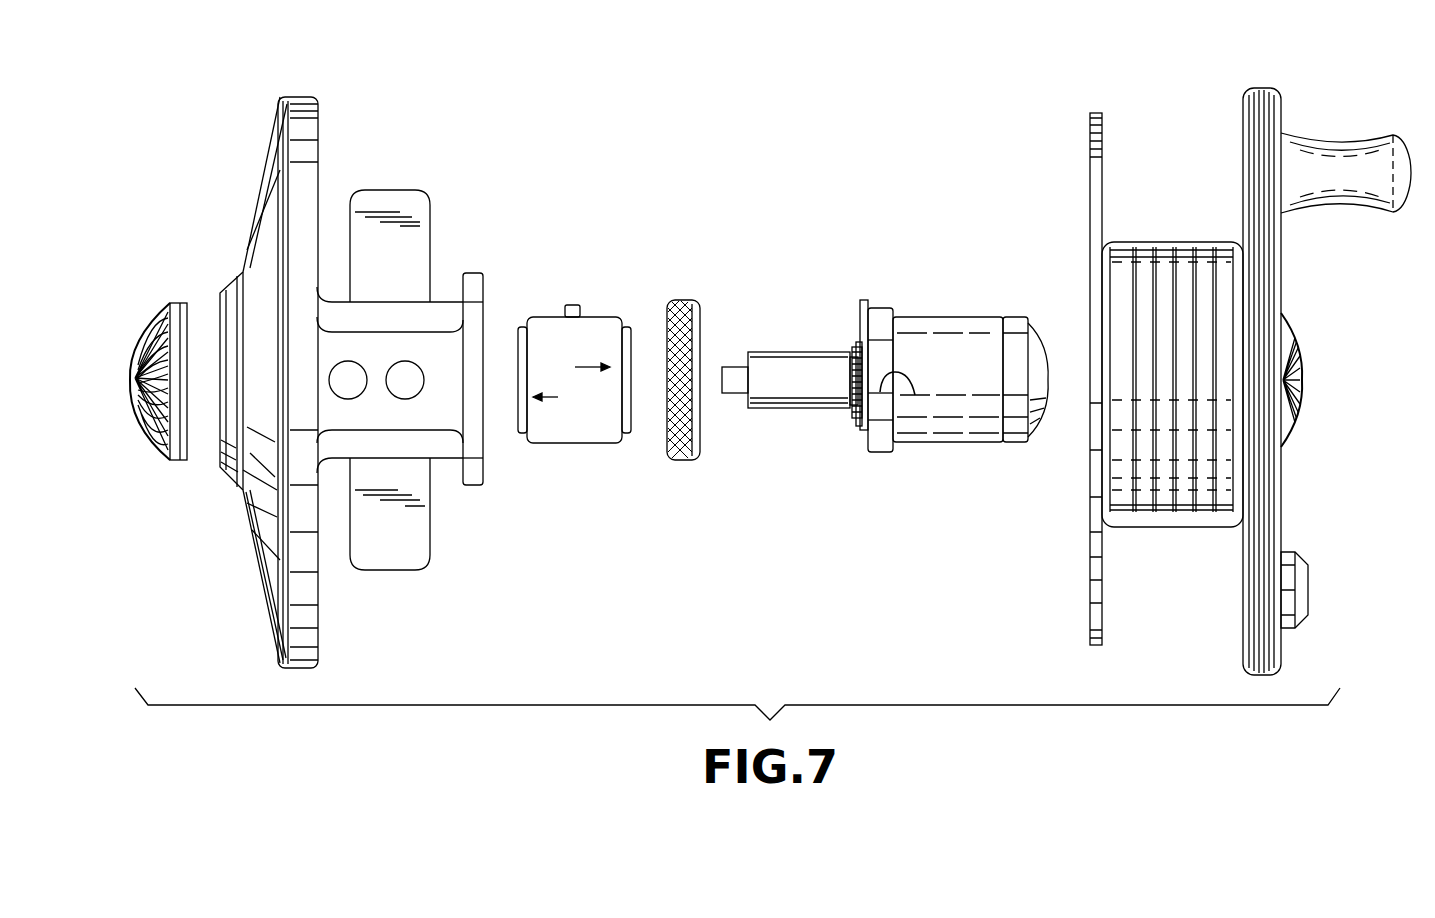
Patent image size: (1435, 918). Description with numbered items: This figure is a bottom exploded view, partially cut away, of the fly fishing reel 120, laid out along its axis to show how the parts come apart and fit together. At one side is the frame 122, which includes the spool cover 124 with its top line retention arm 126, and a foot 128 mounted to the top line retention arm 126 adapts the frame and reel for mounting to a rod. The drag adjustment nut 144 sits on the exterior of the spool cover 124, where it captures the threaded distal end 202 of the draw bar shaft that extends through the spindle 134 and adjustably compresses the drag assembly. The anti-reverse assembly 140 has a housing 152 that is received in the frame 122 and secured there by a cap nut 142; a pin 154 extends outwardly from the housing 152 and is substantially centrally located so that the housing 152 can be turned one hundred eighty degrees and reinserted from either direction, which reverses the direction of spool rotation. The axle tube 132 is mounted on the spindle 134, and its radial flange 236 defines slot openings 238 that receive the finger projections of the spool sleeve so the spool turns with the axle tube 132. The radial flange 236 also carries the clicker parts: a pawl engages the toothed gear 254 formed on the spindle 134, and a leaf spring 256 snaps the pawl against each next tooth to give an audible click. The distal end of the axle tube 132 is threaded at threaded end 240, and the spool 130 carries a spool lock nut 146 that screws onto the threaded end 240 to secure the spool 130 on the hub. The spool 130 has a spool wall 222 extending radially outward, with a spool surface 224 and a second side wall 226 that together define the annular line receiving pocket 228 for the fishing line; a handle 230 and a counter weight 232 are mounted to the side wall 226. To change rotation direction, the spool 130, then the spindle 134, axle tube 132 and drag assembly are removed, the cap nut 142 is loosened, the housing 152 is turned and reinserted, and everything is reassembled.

The fly fishing reel 120 is at (797, 138).
The frame 122 is at (255, 158).
The spool cover 124 is at (277, 573).
The top line retention arm 126 is at (437, 408).
The foot 128 is at (393, 572).
The spool 130 is at (1214, 354).
The axle tube 132 is at (990, 442).
The spindle 134 is at (855, 348).
The anti-reverse assembly 140 is at (598, 328).
The cap nut 142 is at (680, 460).
The drag adjustment nut 144 is at (150, 312).
The spool lock nut 146 is at (1290, 437).
The housing 152 is at (602, 313).
The pin 154 is at (572, 302).
The threaded distal end 202 is at (737, 388).
The spool wall 222 is at (1285, 250).
The spool surface 224 is at (1163, 515).
The second side wall 226 is at (1103, 605).
The annular line receiving pocket 228 is at (1172, 307).
The handle 230 is at (1343, 135).
The counter weight 232 is at (1305, 613).
The radial flange 236 is at (887, 308).
The slot openings 238 is at (915, 395).
The threaded end 240 is at (1013, 317).
The toothed gear 254 is at (867, 430).
The leaf spring 256 is at (867, 300).